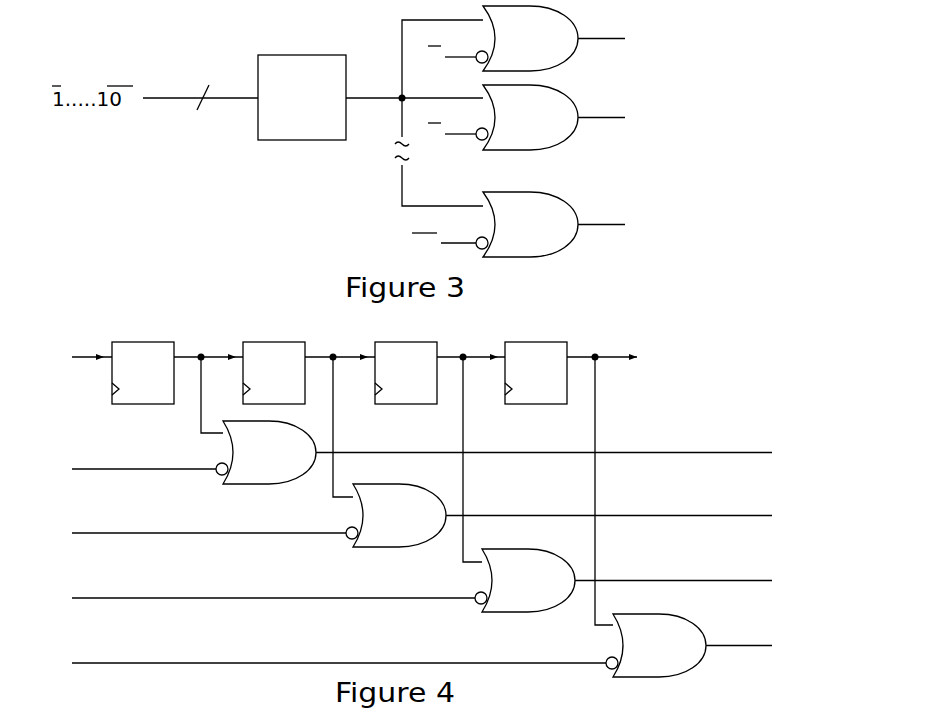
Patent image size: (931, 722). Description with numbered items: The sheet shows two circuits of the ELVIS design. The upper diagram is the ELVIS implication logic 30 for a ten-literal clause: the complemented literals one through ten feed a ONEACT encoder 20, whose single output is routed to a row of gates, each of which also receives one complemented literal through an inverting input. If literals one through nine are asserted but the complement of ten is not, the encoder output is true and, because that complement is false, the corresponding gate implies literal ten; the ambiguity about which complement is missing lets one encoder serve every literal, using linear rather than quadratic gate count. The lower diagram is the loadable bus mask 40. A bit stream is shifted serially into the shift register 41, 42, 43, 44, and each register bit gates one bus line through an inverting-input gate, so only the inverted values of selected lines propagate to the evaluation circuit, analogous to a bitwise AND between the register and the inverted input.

In FIG. 3, the ONEACT encoder 20 is at (288, 110).
In FIG. 3, the ELVIS implication logic 30 is at (318, 185).
In FIG. 4, the loadable bus mask 40 is at (630, 427).
In FIG. 4, the shift register stage 41 is at (148, 404).
In FIG. 4, the shift register stage 42 is at (272, 342).
In FIG. 4, the shift register stage 43 is at (425, 384).
In FIG. 4, the shift register stage 44 is at (551, 384).